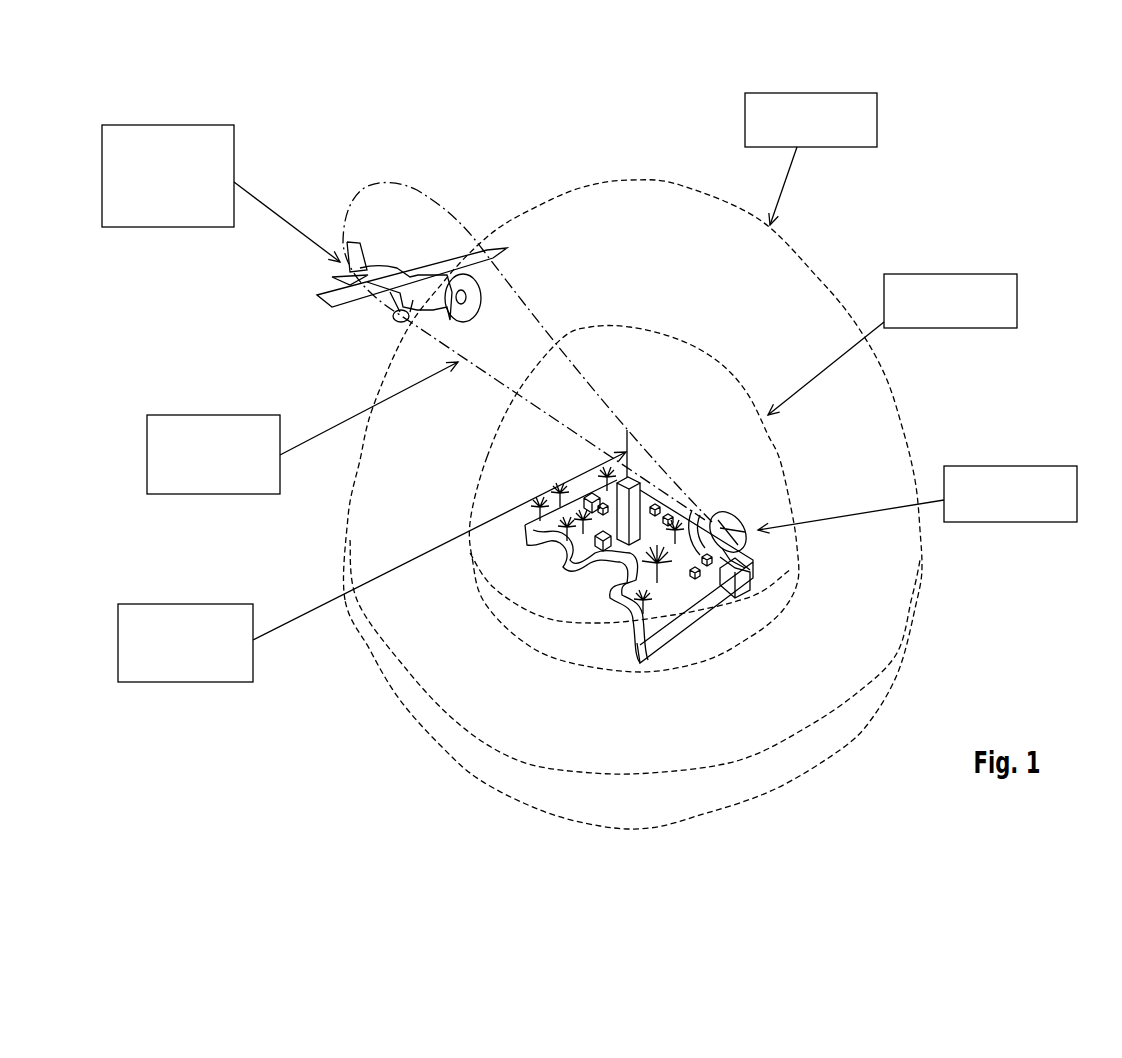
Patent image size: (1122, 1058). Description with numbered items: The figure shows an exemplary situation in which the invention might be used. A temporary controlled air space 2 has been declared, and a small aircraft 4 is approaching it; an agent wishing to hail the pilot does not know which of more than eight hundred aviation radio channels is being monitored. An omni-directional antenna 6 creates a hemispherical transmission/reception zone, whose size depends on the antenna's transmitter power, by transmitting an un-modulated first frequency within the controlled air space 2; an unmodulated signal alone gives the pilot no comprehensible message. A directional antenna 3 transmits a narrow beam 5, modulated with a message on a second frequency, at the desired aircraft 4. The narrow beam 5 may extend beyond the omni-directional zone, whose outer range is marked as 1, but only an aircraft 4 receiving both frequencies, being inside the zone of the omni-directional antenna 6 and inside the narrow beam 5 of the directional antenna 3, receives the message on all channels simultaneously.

The outer range of semi-omni antenna 1 is at (877, 118).
The temporary controlled air space 2 is at (1017, 300).
The directional antenna 3 is at (1013, 466).
The small aircraft 4 is at (168, 227).
The narrow beam 5 is at (213, 415).
The omni-directional antenna 6 is at (183, 682).